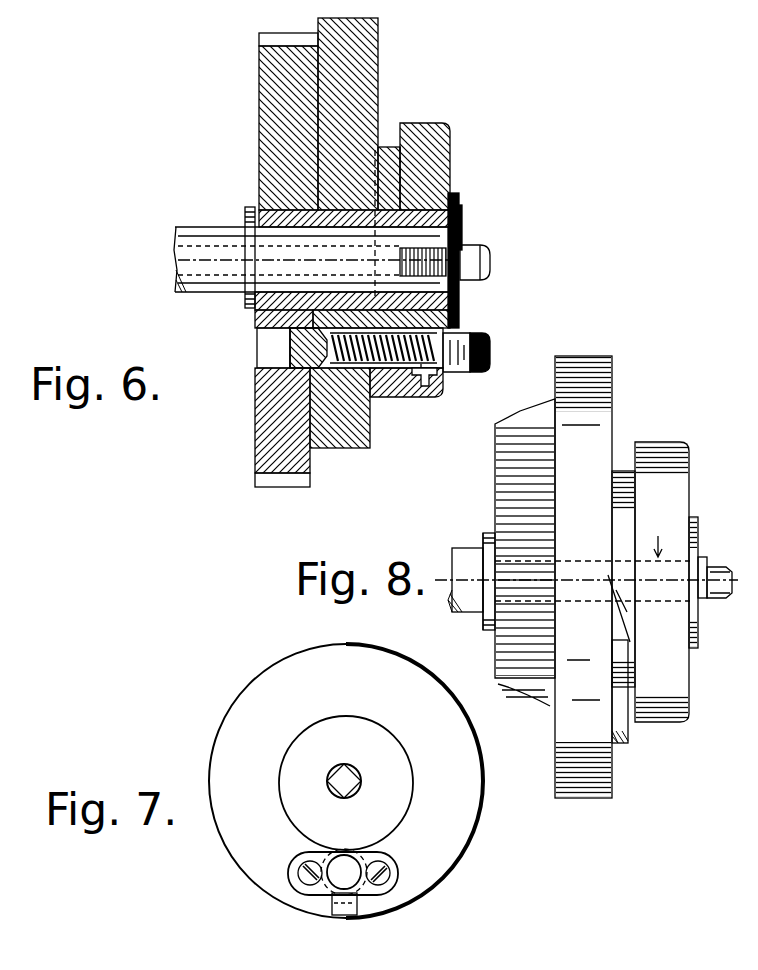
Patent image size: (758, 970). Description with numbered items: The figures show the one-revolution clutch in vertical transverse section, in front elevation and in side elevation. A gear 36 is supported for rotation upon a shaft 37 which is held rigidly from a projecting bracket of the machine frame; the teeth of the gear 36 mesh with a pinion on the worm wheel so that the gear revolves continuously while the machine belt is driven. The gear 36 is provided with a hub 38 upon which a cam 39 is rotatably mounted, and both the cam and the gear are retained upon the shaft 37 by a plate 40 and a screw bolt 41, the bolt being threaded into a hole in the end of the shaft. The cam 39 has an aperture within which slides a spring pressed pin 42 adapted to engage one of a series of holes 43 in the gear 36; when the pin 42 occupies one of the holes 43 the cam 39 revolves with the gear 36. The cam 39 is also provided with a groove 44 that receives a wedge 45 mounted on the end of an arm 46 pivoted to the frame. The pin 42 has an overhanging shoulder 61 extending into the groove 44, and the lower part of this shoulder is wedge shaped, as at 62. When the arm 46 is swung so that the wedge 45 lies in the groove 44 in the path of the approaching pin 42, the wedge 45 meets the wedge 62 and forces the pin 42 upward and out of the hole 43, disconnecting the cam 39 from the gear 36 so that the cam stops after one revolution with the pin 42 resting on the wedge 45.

In FIG. 6, the gear 36 is at (258, 103).
In FIG. 8, the gear 36 is at (533, 690).
In FIG. 6, the shaft 37 is at (204, 228).
In FIG. 8, the shaft 37 is at (463, 548).
In FIG. 6, the hub 38 is at (458, 196).
In FIG. 6, the cam 39 is at (378, 42).
In FIG. 8, the cam 39 is at (613, 390).
In FIG. 7, the cam 39 is at (236, 712).
In FIG. 6, the plate 40 is at (462, 218).
In FIG. 6, the screw bolt 41 is at (490, 252).
In FIG. 6, the spring pressed pin 42 is at (296, 346).
In FIG. 8, the spring pressed pin 42 is at (530, 569).
In FIG. 6, the holes 43 is at (257, 345).
In FIG. 8, the holes 43 is at (506, 590).
In FIG. 6, the groove 44 is at (388, 125).
In FIG. 8, the groove 44 is at (622, 448).
In FIG. 8, the wedge 45 is at (627, 613).
In FIG. 7, the arm 46 is at (278, 776).
In FIG. 6, the overhanging shoulder 61 is at (410, 397).
In FIG. 7, the overhanging shoulder 61 is at (332, 900).
In FIG. 8, the wedge 62 is at (608, 593).